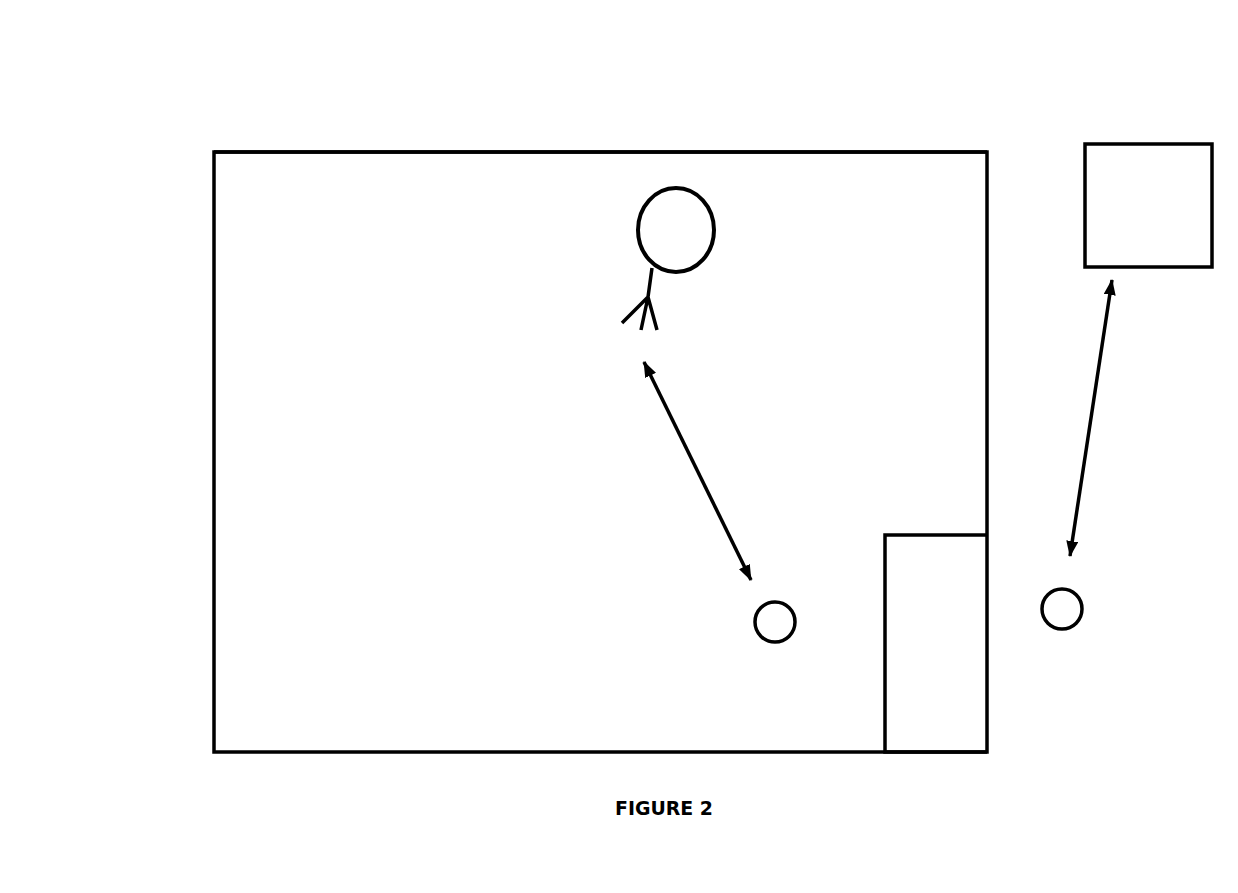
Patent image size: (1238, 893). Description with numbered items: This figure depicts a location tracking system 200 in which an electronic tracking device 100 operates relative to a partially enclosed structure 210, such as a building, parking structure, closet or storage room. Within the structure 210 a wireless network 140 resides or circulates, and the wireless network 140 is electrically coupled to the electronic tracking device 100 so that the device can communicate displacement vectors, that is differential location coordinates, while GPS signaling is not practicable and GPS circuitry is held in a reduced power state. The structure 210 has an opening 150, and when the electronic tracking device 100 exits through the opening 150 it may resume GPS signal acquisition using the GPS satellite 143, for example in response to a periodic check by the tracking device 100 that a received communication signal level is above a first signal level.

The electronic tracking device 100 is at (738, 633).
The wireless network 140 is at (714, 246).
The GPS satellite 143 is at (1142, 140).
The opening 150 is at (942, 697).
The environment 200 is at (198, 590).
The partially enclosed structure 210 is at (352, 152).